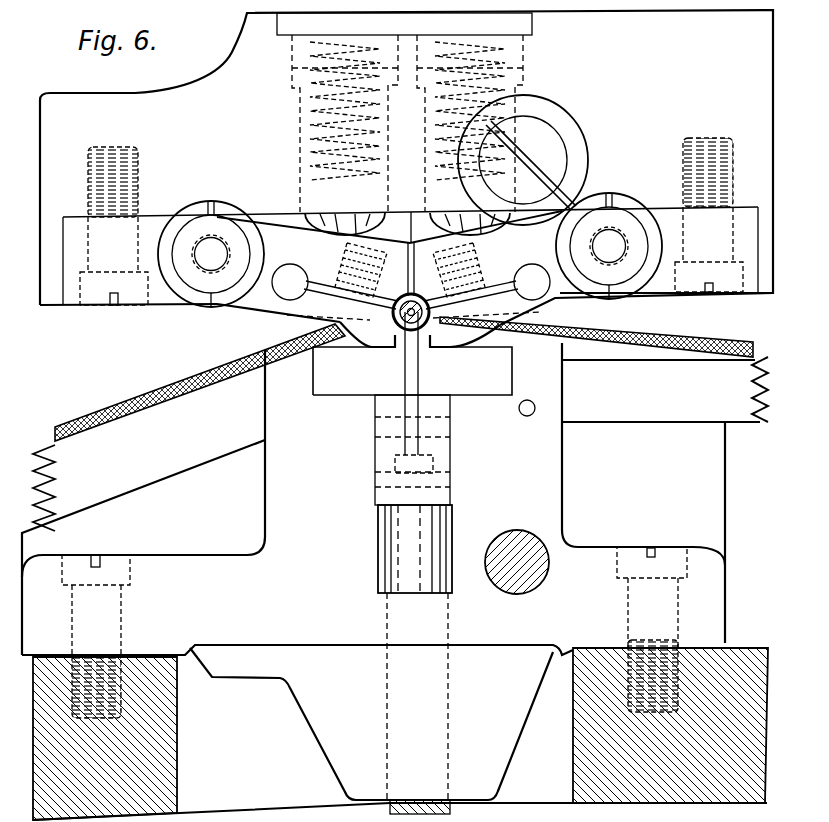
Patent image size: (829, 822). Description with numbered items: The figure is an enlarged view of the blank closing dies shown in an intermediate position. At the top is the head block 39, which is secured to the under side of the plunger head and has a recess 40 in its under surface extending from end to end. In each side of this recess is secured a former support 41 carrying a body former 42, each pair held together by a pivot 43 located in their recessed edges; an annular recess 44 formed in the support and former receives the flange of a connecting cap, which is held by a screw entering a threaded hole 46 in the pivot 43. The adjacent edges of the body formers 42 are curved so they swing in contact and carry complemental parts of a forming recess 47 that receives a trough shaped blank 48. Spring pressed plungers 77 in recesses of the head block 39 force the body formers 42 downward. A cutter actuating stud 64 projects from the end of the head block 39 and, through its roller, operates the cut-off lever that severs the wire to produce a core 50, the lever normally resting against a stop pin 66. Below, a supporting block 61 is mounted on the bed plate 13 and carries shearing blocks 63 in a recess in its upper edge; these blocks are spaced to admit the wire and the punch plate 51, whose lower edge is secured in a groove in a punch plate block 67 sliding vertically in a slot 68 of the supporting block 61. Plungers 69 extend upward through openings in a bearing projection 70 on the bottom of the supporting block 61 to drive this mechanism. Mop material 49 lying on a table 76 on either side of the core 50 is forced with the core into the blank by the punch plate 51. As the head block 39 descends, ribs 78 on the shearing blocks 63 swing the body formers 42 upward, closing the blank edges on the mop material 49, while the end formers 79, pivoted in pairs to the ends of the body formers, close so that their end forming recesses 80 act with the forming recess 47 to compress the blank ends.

The bed plate 13 is at (747, 717).
The head block 39 is at (127, 103).
The recess 40 is at (758, 267).
The former support 41 is at (738, 212).
The body former 42 is at (552, 227).
The pivot 43 is at (627, 235).
The annular recess 44 is at (667, 238).
The threaded hole 46 is at (228, 255).
The forming recess 47 is at (417, 298).
The trough shaped blank 48 is at (403, 297).
The mop material 49 is at (657, 343).
The core 50 is at (428, 312).
The punch plate 51 is at (412, 418).
The supporting block 61 is at (277, 508).
The shearing block 63 is at (498, 380).
The cutter actuating stud 64 is at (550, 145).
The stop pin 66 is at (530, 416).
The punch plate block 67 is at (442, 462).
The slot 68 is at (377, 447).
The plunger 69 is at (400, 540).
The bearing projection 70 is at (315, 723).
The table 76 is at (740, 408).
The spring pressed plunger 77 is at (307, 213).
The rib 78 is at (490, 335).
The end former 79 is at (302, 307).
The end forming recess 80 is at (397, 313).